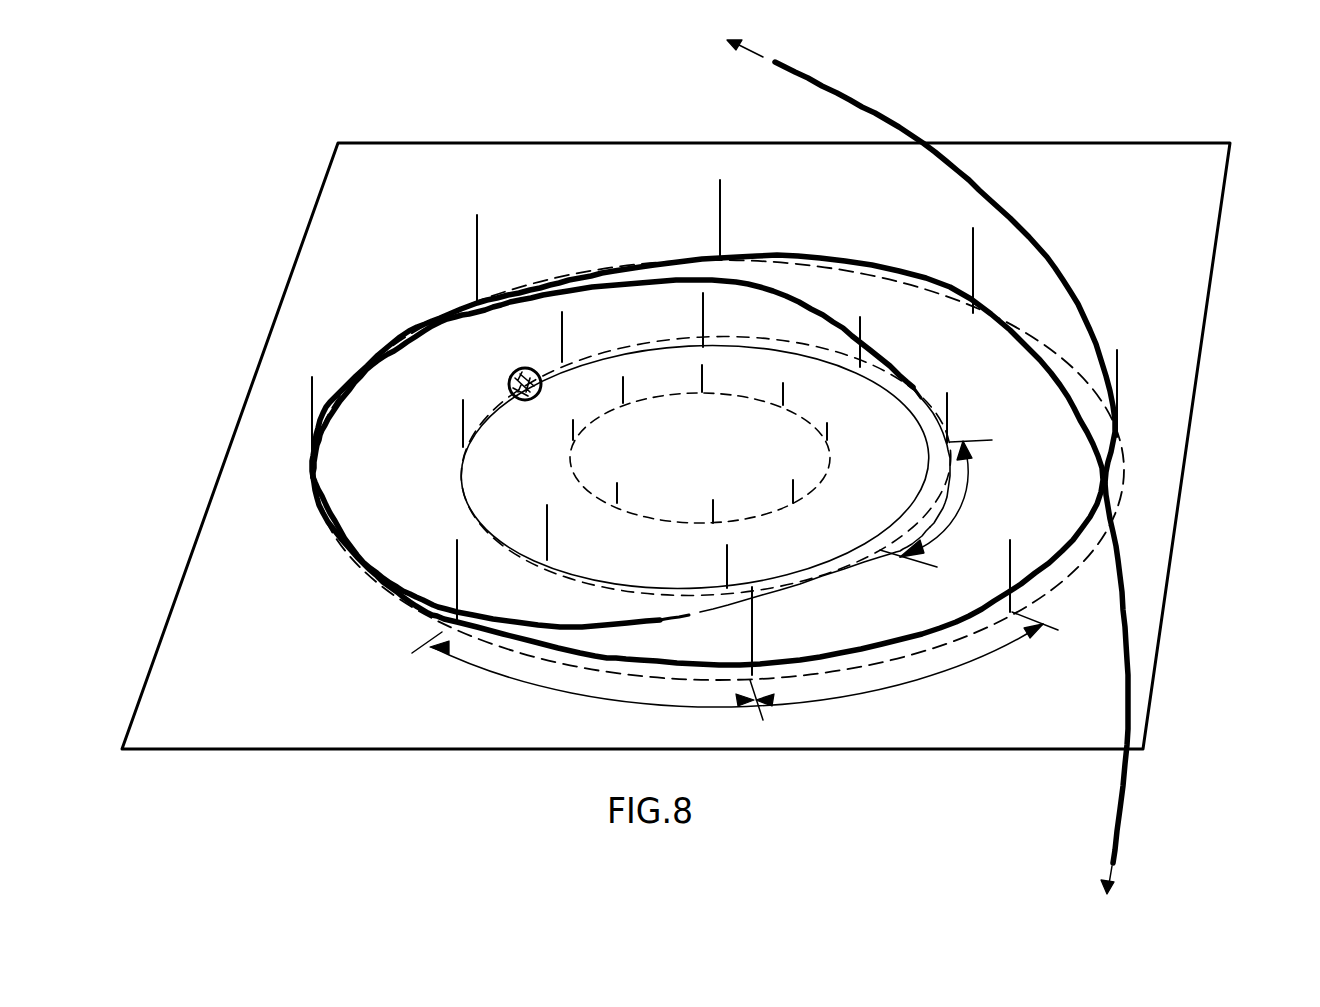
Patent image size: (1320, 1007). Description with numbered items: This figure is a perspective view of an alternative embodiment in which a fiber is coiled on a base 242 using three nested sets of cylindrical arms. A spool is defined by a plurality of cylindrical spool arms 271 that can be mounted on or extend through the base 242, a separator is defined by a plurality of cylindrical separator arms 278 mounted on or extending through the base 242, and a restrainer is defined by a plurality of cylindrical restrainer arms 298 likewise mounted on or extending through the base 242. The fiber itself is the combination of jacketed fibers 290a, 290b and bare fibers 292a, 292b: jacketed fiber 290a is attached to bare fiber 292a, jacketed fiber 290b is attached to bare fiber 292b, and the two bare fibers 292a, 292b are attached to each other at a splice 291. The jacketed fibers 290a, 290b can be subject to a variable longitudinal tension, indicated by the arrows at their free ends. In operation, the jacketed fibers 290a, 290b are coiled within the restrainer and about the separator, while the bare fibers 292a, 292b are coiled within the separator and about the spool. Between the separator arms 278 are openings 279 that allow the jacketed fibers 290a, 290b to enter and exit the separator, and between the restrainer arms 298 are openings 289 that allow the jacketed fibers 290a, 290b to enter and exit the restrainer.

The base 242 is at (1180, 510).
The jacketed fiber 290a is at (1120, 827).
The jacketed fiber 290b is at (823, 80).
The bare fiber 292a is at (777, 590).
The bare fiber 292b is at (921, 396).
The cylindrical restrainer arms 298 is at (976, 268).
The cylindrical separator arms 278 is at (547, 505).
The cylindrical spool arms 271 is at (795, 500).
The splice 291 is at (509, 380).
The openings 279 is at (970, 481).
The openings 289 is at (630, 697).